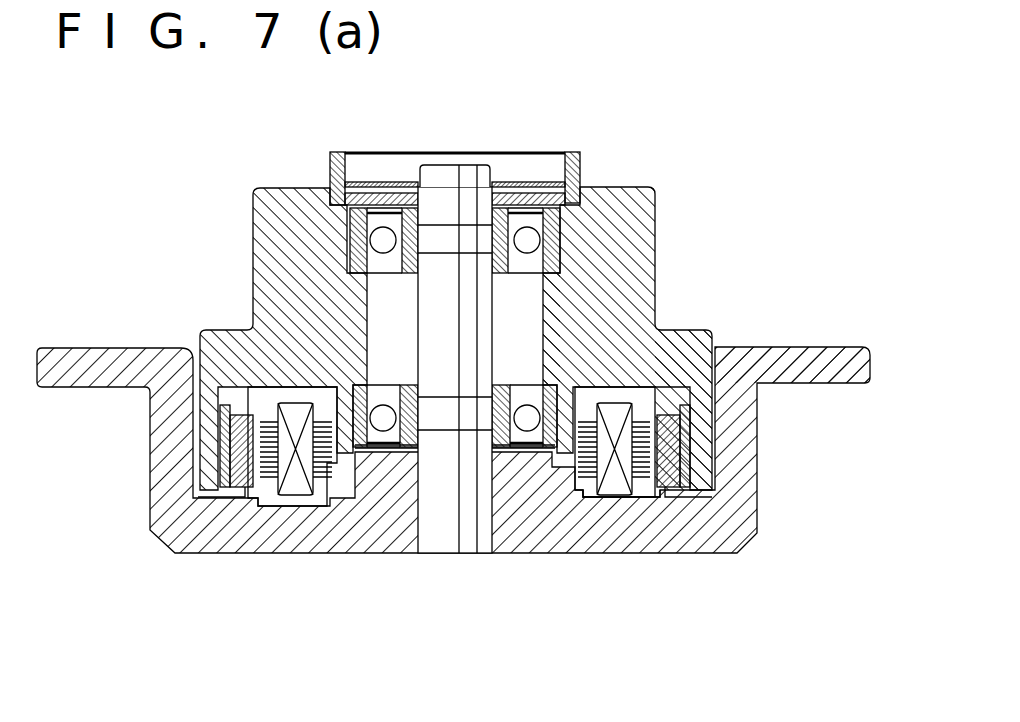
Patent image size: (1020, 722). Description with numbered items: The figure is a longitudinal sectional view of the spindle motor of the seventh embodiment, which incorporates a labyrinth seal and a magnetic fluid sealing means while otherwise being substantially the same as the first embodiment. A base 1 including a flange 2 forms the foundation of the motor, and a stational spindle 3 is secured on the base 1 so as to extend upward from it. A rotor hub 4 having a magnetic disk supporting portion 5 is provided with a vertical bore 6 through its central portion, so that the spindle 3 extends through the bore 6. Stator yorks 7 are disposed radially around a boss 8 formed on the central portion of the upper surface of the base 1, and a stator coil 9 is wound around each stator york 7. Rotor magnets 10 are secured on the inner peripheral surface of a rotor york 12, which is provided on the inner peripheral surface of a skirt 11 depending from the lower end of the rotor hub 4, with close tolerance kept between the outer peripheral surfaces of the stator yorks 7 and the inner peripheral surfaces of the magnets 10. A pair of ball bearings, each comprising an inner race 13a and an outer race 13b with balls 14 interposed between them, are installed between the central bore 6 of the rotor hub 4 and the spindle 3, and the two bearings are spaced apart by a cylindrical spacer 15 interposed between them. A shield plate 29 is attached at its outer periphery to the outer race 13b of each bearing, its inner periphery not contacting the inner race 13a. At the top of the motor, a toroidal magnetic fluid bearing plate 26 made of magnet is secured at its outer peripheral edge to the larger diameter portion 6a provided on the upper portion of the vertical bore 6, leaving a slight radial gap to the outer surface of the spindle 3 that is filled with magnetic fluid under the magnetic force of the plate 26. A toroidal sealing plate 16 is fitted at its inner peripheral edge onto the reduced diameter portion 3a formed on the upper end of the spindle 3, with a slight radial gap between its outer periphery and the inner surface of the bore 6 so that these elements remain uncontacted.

The base 1 is at (708, 553).
The flange 2 is at (836, 385).
The stational spindle 3 is at (472, 536).
The reduced diameter portion 3a is at (466, 176).
The rotor hub 4 is at (640, 192).
The magnetic disk supporting portion 5 is at (688, 330).
The vertical bore 6 is at (553, 306).
The larger diameter portion 6a is at (559, 160).
The stator yorks 7 is at (640, 482).
The boss 8 is at (597, 490).
The stator coil 9 is at (613, 490).
The rotor magnet 10 is at (662, 498).
The skirt 11 is at (697, 444).
The rotor york 12 is at (668, 464).
The inner race 13a is at (402, 183).
The outer race 13b is at (348, 224).
The ball bearing 14 is at (378, 242).
The cylindrical spacer 15 is at (352, 318).
The toroidal sealing plate 16 is at (532, 186).
The toroidal magnetic fluid bearing plate 26 is at (518, 193).
The shield plate 29 is at (364, 193).